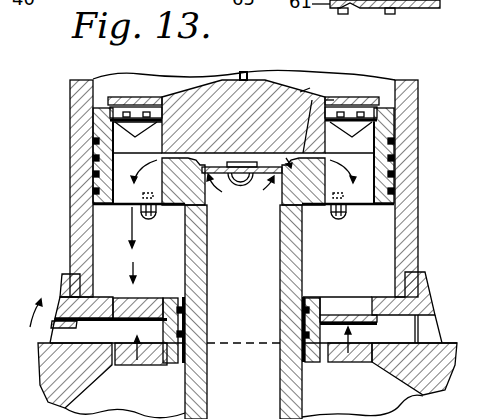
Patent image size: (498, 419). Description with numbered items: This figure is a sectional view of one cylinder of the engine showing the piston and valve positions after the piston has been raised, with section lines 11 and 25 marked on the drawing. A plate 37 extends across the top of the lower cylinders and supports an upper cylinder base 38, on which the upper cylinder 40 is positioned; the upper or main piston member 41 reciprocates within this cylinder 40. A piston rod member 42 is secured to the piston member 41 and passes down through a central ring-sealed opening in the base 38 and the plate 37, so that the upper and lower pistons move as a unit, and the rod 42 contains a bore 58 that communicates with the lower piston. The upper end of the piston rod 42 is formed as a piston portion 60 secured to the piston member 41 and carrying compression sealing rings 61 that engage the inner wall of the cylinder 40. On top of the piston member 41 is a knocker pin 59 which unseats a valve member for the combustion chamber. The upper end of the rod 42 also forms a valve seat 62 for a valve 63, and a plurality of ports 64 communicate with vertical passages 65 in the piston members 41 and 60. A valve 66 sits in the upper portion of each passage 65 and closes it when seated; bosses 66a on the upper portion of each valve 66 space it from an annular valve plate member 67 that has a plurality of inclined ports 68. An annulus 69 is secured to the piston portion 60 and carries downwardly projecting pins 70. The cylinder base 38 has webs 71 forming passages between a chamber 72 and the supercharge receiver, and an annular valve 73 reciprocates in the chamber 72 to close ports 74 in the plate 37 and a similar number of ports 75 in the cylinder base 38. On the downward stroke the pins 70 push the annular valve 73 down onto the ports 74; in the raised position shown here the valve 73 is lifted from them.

The section line 11- 11 is at (108, 90).
The section line 25- 25 is at (38, 343).
The plate 37 is at (40, 374).
The upper cylinder base 38 is at (60, 276).
The upper cylinder 40 is at (80, 80).
The upper or main piston member 41 is at (207, 97).
The piston rod member 42 is at (193, 397).
The bore 58 is at (256, 386).
The knocker pin 59 is at (244, 72).
The piston portion 60 is at (418, 208).
The compression sealing rings 61 is at (393, 161).
The valve seat 62 is at (318, 100).
The valve 63 is at (262, 250).
The ports 64 is at (312, 110).
The vertical passages 65 is at (116, 128).
The valve 66 is at (110, 114).
The bosses 66a is at (160, 99).
The annular valve plate member 67 is at (330, 100).
The inclined ports 68 is at (140, 98).
The annulus 69 is at (312, 205).
The pins 70 is at (148, 220).
The webs 71 is at (443, 318).
The chamber 72 is at (396, 336).
The annular valve 73 is at (153, 300).
The ports 74 is at (152, 350).
The ports 75 is at (128, 312).